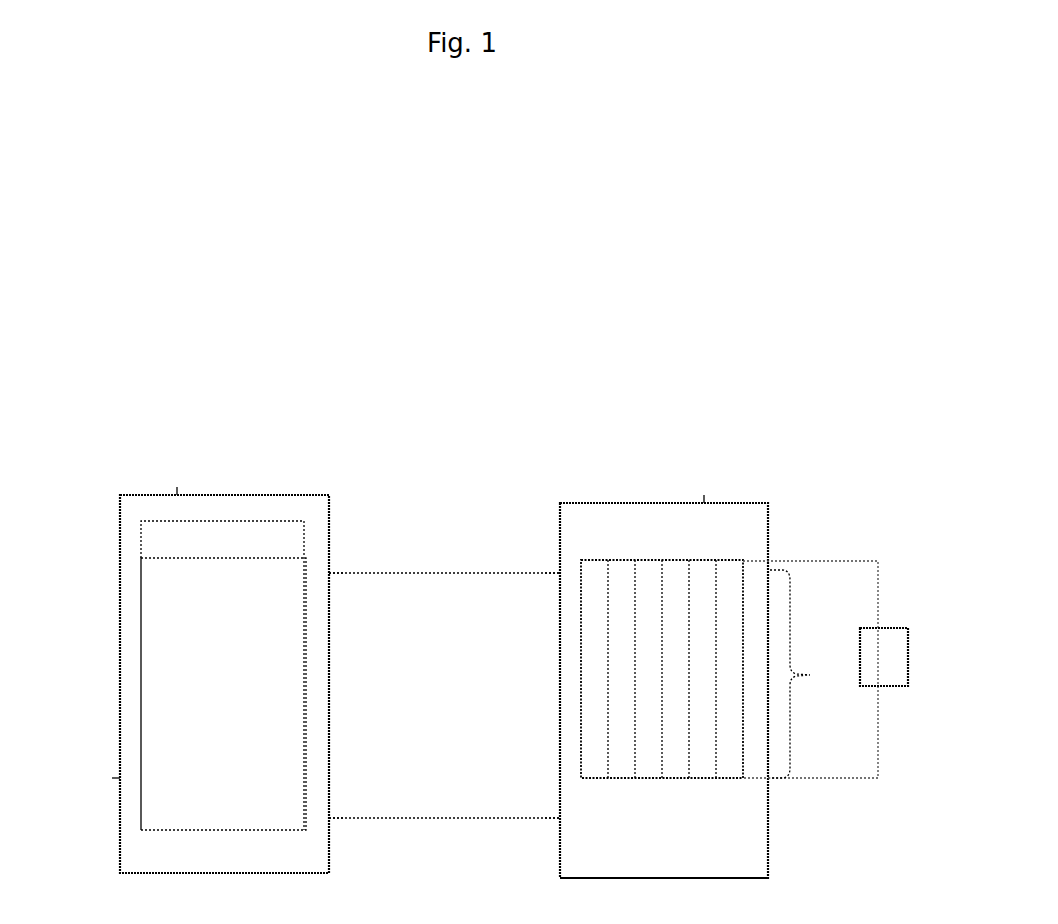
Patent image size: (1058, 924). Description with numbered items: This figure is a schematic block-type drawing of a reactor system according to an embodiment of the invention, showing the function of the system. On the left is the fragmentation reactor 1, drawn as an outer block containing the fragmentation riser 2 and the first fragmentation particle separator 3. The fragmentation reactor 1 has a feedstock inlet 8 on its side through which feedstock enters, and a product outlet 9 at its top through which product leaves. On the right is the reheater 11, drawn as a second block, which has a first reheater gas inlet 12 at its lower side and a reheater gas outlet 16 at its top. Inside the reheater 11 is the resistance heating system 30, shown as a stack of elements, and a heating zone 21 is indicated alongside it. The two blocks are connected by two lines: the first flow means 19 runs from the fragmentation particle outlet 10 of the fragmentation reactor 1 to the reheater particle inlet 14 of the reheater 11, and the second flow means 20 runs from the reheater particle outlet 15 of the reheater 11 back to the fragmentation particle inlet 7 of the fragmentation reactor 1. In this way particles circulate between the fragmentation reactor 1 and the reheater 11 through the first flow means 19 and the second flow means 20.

The fragmentation reactor 1 is at (286, 458).
The fragmentation riser 2 is at (162, 614).
The first fragmentation particle separator 3 is at (138, 529).
The fragmentation particle inlet 7 is at (333, 815).
The feedstock inlet 8 is at (118, 778).
The product outlet 9 is at (177, 495).
The fragmentation particle outlet 10 is at (333, 568).
The reheater 11 is at (614, 458).
The first reheater gas inlet 12 is at (770, 838).
The reheater particle inlet 14 is at (557, 568).
The reheater particle outlet 15 is at (557, 815).
The reheater gas outlet 16 is at (704, 503).
The first flow means 19 is at (448, 572).
The second flow means 20 is at (443, 816).
The heating zone 21 is at (825, 669).
The resistance heating system 30 is at (568, 663).